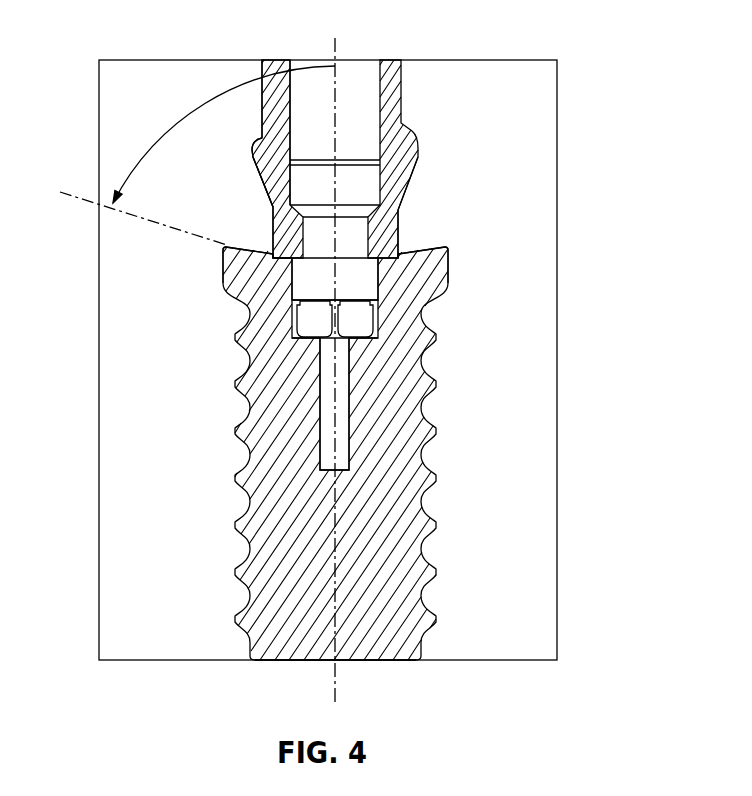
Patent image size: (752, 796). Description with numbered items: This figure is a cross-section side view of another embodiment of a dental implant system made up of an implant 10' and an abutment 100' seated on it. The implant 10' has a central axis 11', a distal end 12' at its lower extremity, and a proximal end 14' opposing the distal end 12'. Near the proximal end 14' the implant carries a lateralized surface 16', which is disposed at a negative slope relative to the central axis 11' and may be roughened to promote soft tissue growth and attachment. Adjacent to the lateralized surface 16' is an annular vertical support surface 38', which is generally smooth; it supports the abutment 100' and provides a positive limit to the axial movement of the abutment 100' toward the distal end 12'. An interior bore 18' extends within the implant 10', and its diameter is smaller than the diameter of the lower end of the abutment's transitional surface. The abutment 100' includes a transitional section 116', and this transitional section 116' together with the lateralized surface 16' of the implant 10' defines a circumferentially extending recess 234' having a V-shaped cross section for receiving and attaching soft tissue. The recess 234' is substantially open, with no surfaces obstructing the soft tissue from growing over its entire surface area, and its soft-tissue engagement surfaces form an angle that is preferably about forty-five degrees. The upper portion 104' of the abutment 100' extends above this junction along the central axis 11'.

The implant 10' is at (236, 453).
The central axis 11' is at (271, 373).
The distal end 12' is at (367, 691).
The proximal end 14' is at (236, 276).
The lateralized surface 16' is at (167, 234).
The interior bore 18' is at (459, 381).
The annular vertical support surface 38' is at (466, 290).
The abutment 100' is at (365, 134).
The abutment body 104' is at (243, 112).
The transitional section 116' is at (518, 194).
The circumferentially extending recess 234' is at (147, 178).